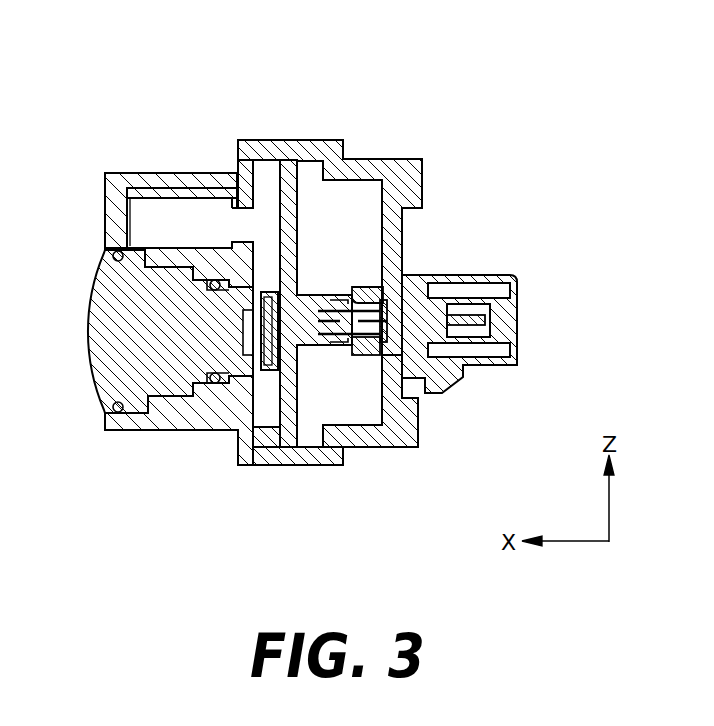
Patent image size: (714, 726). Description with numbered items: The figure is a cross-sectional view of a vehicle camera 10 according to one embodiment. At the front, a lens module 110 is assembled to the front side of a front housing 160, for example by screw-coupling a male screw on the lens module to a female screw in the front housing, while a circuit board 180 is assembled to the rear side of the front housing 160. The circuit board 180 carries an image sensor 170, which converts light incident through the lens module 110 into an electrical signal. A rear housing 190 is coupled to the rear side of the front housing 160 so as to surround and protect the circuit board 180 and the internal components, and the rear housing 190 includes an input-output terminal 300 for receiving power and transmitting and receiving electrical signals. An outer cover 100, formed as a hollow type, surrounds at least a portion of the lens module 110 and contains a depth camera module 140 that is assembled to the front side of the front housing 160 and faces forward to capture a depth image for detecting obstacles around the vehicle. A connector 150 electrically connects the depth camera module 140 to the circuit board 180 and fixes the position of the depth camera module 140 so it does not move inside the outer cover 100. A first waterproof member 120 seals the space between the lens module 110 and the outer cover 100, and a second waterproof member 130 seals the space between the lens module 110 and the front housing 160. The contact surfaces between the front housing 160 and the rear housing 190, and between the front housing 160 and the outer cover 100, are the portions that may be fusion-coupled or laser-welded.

The vehicle camera 10 is at (88, 43).
The outer cover 100 is at (143, 173).
The lens module 110 is at (93, 333).
The first waterproof member 120 is at (117, 415).
The second waterproof member 130 is at (212, 385).
The depth camera module 140 is at (135, 216).
The connector 150 is at (267, 210).
The front housing 160 is at (247, 462).
The image sensor 170 is at (289, 162).
The circuit board 180 is at (270, 372).
The rear housing 190 is at (355, 163).
The input-output terminal 300 is at (493, 308).